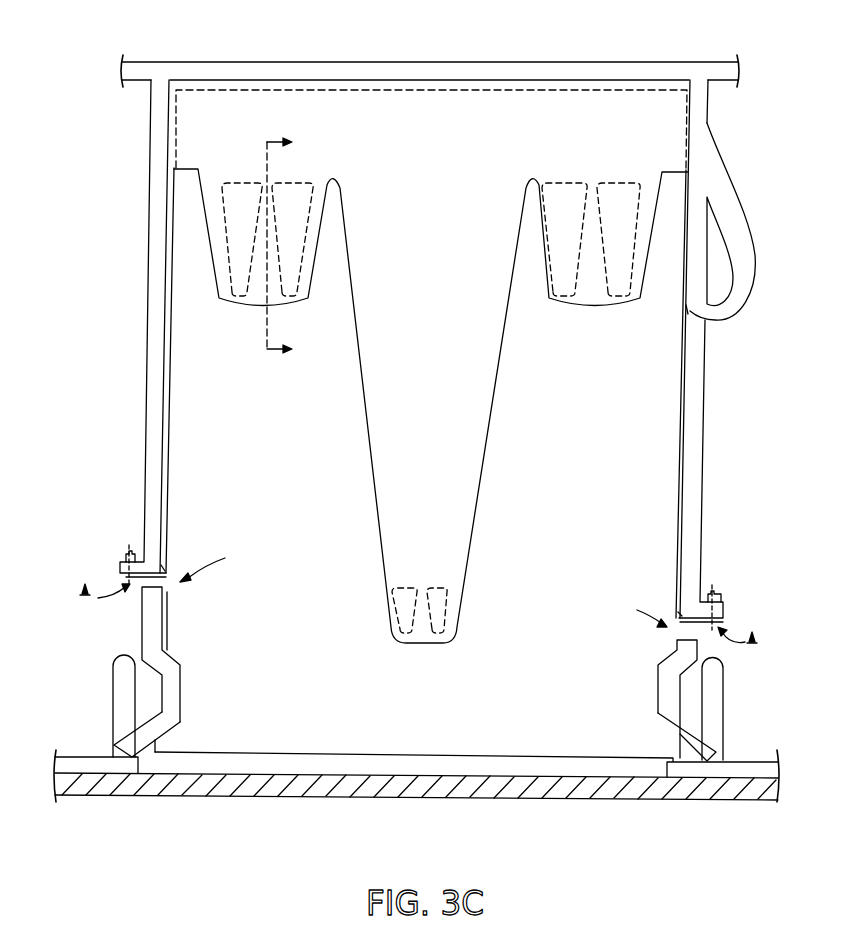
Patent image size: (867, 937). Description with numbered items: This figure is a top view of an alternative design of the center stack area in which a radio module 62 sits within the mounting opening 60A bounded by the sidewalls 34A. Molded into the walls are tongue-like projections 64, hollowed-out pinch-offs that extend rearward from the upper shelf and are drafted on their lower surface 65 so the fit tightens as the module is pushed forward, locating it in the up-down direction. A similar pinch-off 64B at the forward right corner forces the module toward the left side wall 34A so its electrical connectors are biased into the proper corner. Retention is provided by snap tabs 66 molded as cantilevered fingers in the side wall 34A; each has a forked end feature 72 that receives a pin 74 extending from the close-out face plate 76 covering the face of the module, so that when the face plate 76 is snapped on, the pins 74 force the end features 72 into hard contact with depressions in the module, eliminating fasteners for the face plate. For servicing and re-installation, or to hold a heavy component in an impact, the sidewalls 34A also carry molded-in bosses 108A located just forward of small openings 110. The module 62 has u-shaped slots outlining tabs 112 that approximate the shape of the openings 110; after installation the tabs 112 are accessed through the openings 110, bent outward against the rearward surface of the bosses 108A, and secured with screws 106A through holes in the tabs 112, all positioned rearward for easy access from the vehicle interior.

The side wall 34A is at (157, 365).
The mounting opening 60A is at (223, 84).
The tongue-like projections 64 is at (232, 307).
The tongue-like projection 64B is at (757, 287).
The lower surface 65 is at (686, 311).
The snap tab 66 is at (148, 642).
The end feature 72 is at (177, 723).
The pin 74 is at (122, 676).
The radio module 62 is at (230, 752).
The face plate 76 is at (547, 782).
The boss 108A is at (127, 556).
The screw 106A is at (83, 591).
The opening 110 is at (423, 587).
The tab 112 is at (167, 567).